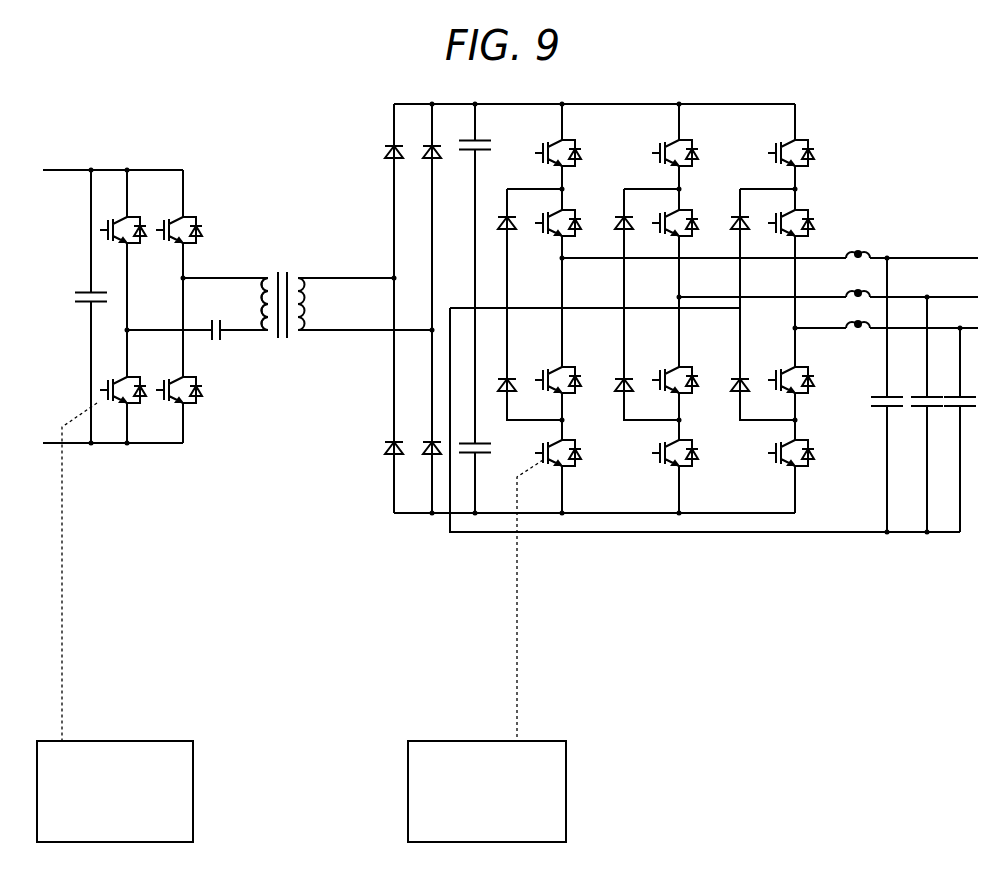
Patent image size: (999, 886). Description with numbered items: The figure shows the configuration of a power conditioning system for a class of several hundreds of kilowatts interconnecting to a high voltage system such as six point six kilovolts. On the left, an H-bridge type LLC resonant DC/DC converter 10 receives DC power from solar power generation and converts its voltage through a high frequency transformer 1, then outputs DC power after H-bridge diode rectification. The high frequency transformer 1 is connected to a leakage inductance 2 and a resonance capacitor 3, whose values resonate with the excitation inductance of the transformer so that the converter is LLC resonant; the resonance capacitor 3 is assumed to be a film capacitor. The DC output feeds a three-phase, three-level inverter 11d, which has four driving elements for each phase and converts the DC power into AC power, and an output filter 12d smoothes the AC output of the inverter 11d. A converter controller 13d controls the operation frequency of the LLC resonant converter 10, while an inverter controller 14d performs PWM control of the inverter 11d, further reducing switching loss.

The high frequency transformer 1 is at (293, 272).
The leakage inductance 2 is at (243, 268).
The resonance capacitor 3 is at (220, 338).
The LLC resonant converter 10 is at (408, 382).
The inverter 11d is at (487, 543).
The output filter 12d is at (823, 543).
The converter controller 13d is at (125, 741).
The inverter controller 14d is at (483, 741).